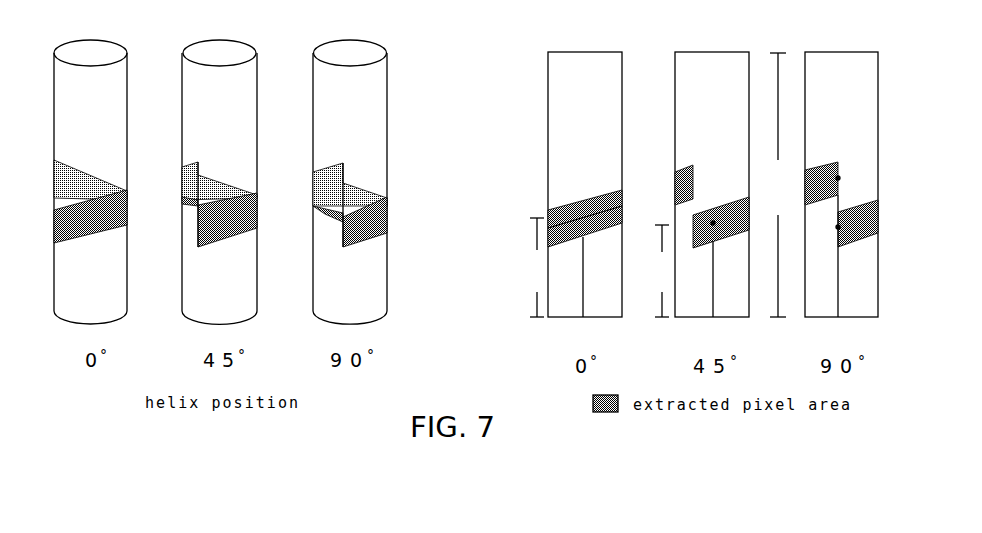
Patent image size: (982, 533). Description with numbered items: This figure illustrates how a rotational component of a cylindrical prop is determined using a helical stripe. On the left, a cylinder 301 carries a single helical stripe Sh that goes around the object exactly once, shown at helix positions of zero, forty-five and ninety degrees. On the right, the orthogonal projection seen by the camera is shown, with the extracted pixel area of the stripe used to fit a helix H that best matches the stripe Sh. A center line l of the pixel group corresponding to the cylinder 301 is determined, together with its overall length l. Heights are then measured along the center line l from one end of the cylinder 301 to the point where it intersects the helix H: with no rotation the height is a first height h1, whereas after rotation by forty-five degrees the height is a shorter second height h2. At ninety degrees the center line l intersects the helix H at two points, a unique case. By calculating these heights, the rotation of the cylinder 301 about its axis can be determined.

The cylinder 301 is at (100, 68).
The helical stripe Sh is at (386, 228).
The helix H is at (562, 208).
The first height h1 is at (529, 267).
The second height h2 is at (654, 271).
The center line l is at (778, 185).